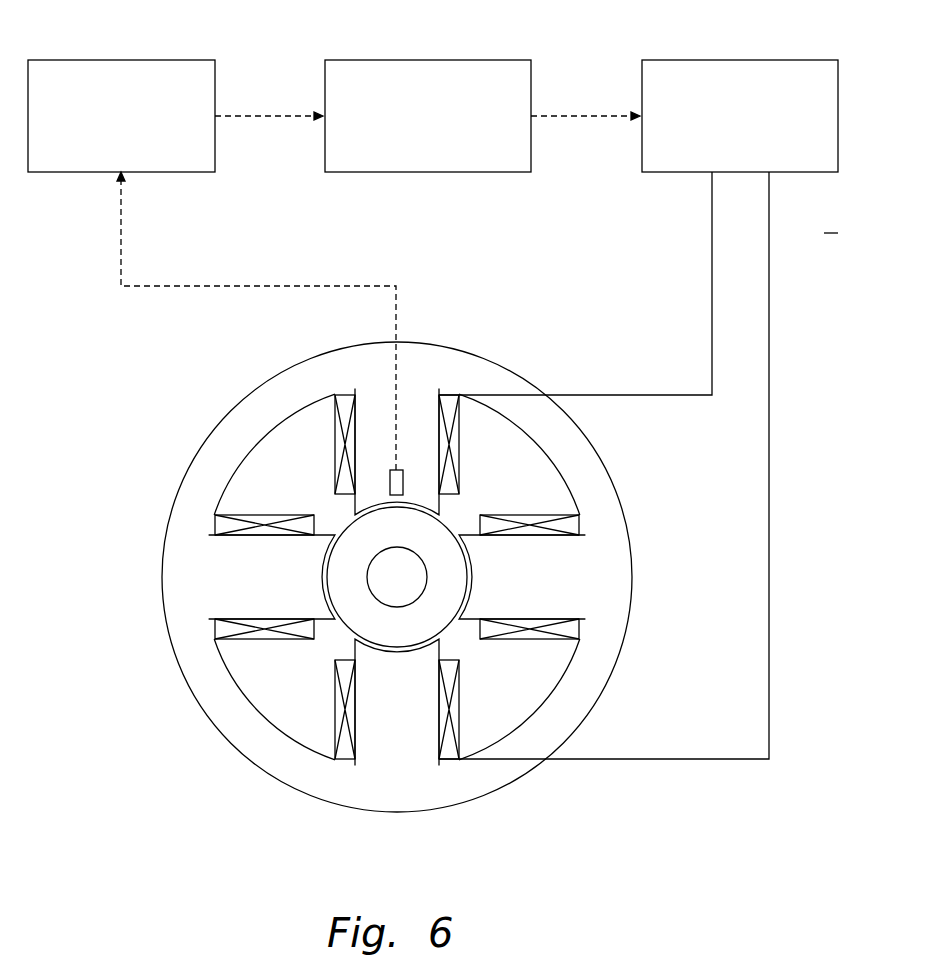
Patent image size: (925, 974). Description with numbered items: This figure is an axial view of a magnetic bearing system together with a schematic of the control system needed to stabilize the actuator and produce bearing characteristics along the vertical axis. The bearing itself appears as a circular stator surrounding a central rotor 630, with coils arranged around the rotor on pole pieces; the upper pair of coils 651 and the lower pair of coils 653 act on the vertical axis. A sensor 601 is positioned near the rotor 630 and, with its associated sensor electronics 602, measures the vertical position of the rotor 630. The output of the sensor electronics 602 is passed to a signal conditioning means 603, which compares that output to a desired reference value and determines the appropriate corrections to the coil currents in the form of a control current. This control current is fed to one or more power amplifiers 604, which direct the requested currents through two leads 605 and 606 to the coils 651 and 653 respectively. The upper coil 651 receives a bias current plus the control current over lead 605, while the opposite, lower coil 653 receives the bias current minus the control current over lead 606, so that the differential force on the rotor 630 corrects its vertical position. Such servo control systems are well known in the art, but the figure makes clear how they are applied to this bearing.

The sensor 601 is at (390, 480).
The sensor electronics 602 is at (120, 59).
The signal conditioning means 603 is at (428, 59).
The power amplifier 604 is at (740, 59).
The lead 605 is at (712, 283).
The lead 606 is at (769, 283).
The rotor 630 is at (345, 570).
The coil 651 is at (345, 410).
The coil 653 is at (335, 709).